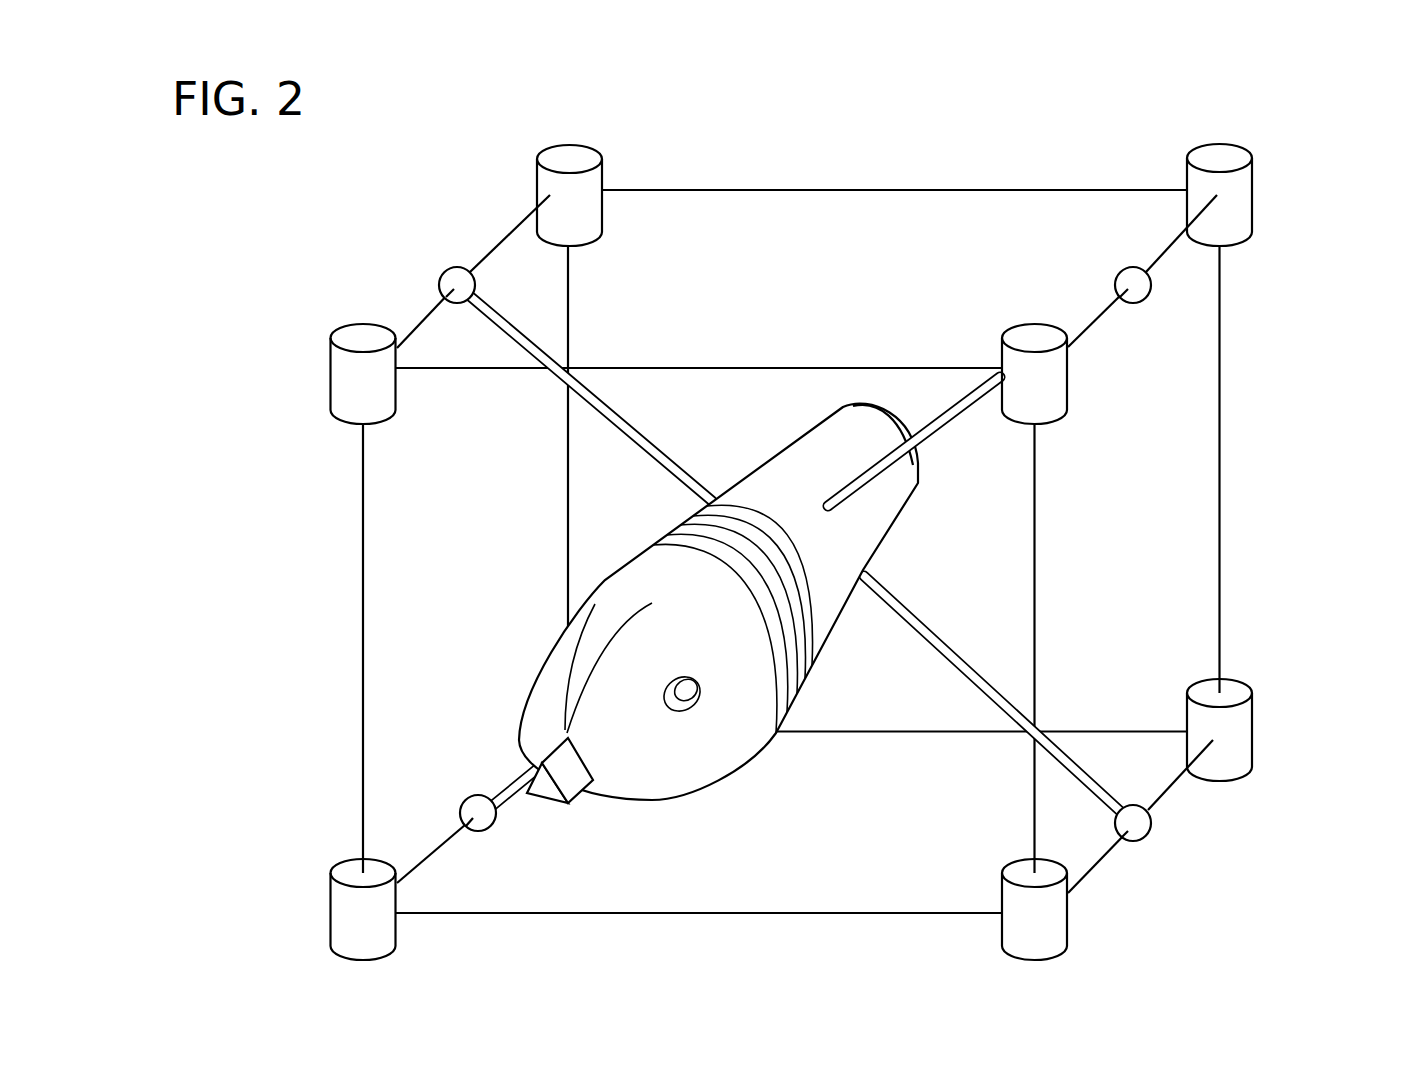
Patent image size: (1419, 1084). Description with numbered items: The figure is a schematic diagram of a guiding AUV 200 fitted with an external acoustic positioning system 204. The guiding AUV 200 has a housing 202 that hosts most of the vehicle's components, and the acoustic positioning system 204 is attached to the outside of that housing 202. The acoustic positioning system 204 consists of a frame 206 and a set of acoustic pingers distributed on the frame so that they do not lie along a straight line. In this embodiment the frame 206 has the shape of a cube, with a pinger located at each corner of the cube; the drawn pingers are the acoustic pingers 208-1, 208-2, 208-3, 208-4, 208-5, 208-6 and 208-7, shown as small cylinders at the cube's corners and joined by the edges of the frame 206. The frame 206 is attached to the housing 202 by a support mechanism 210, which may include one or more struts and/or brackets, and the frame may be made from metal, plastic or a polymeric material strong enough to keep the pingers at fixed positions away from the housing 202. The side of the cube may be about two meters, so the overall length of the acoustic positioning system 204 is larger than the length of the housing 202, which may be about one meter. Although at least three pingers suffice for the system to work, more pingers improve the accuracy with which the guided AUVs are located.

The guiding AUV 200 is at (835, 68).
The housing 202 is at (797, 445).
The external acoustic positioning system 204 is at (701, 551).
The frame 206 is at (358, 677).
The acoustic pinger 208-1 is at (333, 932).
The acoustic pinger 208-2 is at (337, 360).
The acoustic pinger 208-3 is at (547, 183).
The acoustic pinger 208-4 is at (1193, 183).
The acoustic pinger 208-5 is at (1013, 323).
The acoustic pinger 208-6 is at (1248, 723).
The acoustic pinger 208-7 is at (1057, 918).
The support mechanism 210 is at (912, 607).